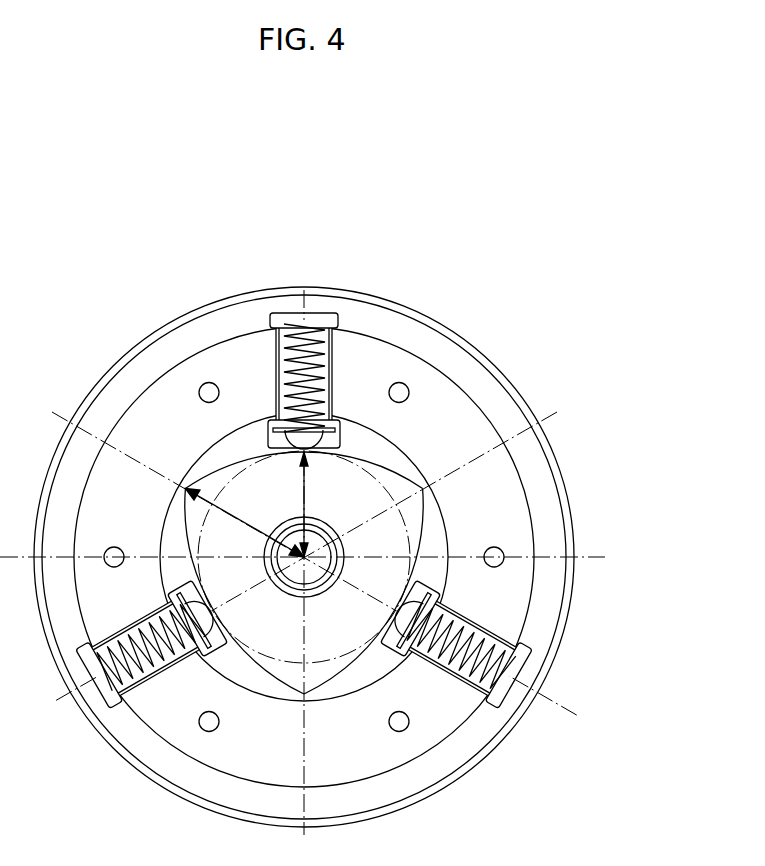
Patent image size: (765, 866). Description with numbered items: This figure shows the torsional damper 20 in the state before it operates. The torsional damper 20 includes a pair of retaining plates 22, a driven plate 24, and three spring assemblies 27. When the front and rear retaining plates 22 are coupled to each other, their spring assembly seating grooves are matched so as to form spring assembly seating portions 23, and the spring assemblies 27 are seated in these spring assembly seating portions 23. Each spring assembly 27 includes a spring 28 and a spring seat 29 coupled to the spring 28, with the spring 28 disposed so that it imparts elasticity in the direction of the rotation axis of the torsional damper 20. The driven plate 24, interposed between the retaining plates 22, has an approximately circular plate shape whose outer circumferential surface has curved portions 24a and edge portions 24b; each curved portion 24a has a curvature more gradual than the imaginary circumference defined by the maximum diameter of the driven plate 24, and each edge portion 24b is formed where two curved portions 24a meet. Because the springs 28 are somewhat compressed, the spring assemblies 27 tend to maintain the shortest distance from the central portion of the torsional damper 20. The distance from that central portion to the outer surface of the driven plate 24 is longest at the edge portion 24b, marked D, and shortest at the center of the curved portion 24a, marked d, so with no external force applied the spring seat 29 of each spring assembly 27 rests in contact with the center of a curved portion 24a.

The torsional damper 20 is at (329, 199).
The retaining plates 22 is at (503, 592).
The spring assembly seating portions 23 is at (277, 370).
The driven plate 24 is at (412, 500).
The curved portion 24a is at (378, 462).
The edge portion 24b is at (422, 486).
The spring assembly 27 is at (329, 346).
The spring 28 is at (337, 363).
The spring seat 29 is at (335, 447).